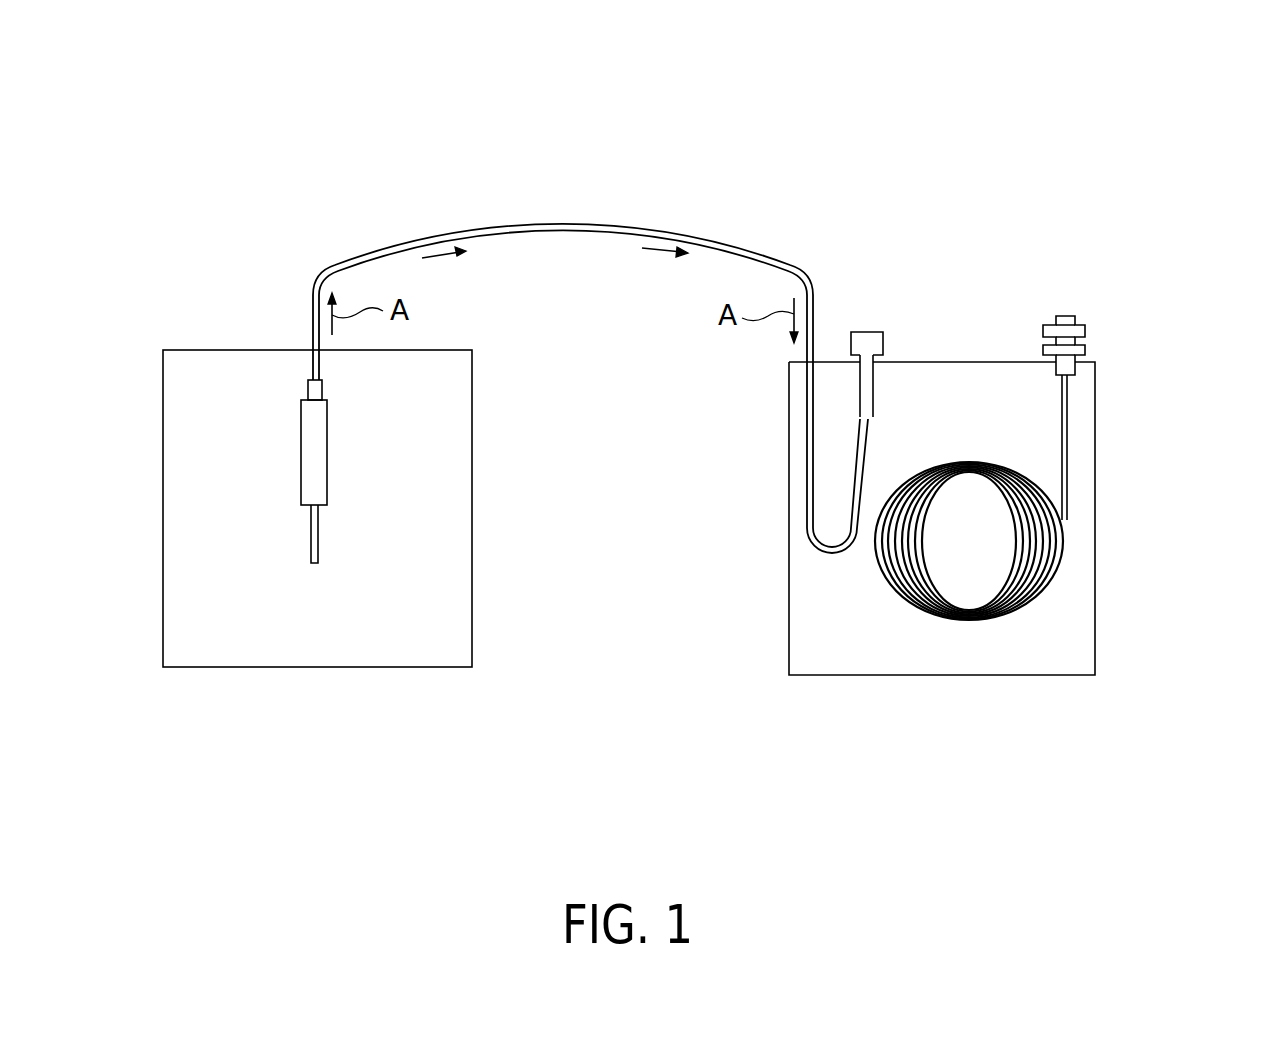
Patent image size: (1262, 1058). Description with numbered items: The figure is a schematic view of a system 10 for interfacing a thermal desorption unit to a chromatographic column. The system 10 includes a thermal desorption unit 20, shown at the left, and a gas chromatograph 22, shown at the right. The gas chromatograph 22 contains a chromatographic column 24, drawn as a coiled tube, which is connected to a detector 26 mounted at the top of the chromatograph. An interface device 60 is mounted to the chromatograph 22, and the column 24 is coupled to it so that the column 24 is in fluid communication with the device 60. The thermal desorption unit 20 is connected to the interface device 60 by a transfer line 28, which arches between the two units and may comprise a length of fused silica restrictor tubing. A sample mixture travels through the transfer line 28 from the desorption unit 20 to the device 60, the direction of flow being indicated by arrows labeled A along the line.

The system 10 is at (1224, 145).
The thermal desorption unit 20 is at (472, 490).
The gas chromatograph 22 is at (789, 484).
The chromatographic column 24 is at (896, 598).
The detector 26 is at (1085, 333).
The transfer line 28 is at (560, 226).
The interface device 60 is at (883, 343).